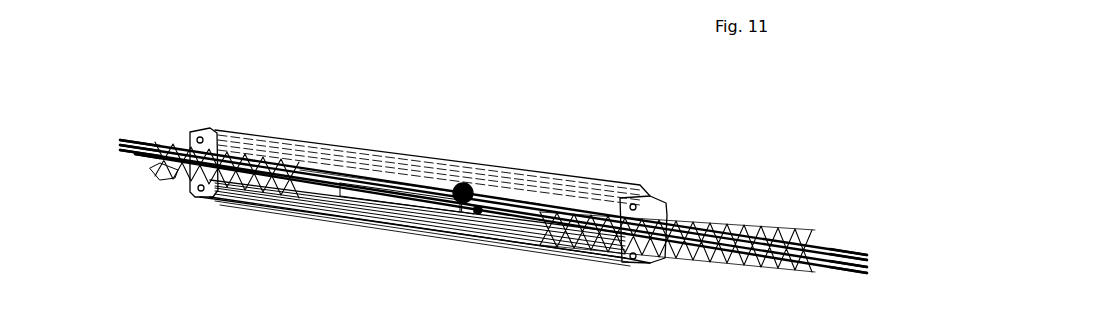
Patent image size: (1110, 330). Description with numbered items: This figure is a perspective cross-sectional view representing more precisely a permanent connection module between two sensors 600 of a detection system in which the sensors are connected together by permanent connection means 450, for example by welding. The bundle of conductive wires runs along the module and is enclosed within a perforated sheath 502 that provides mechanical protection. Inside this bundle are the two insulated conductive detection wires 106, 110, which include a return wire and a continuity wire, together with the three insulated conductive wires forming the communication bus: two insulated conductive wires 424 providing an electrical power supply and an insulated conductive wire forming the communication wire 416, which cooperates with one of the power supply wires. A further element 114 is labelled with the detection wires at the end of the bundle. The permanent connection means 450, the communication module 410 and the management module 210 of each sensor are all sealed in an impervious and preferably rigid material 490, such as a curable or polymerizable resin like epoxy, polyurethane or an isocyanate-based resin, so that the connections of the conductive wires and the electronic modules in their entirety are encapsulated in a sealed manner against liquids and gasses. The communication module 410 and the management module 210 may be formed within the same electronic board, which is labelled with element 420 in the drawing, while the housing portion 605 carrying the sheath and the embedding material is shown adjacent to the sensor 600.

The sensor 600 is at (209, 39).
The perforated sheath 502 is at (172, 141).
The communication wire 416 is at (128, 138).
The electrical power supply conductive wires 424 is at (493, 211).
The impervious rigid material 490 is at (330, 158).
The permanent connection means 450 is at (467, 184).
The housing 605 is at (517, 160).
The communication module 410 is at (373, 197).
The body surface 420 is at (417, 219).
The management module 210 is at (422, 233).
The insulated conductive detection wire 106 is at (858, 277).
The insulated conductive detection wire 110 is at (493, 202).
The cable 114 is at (493, 211).